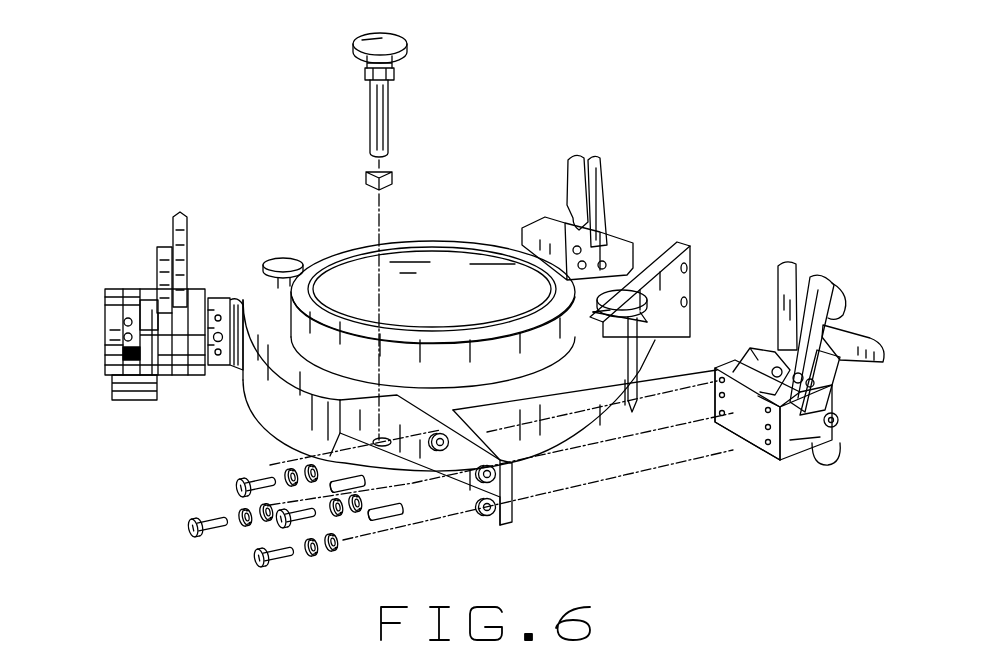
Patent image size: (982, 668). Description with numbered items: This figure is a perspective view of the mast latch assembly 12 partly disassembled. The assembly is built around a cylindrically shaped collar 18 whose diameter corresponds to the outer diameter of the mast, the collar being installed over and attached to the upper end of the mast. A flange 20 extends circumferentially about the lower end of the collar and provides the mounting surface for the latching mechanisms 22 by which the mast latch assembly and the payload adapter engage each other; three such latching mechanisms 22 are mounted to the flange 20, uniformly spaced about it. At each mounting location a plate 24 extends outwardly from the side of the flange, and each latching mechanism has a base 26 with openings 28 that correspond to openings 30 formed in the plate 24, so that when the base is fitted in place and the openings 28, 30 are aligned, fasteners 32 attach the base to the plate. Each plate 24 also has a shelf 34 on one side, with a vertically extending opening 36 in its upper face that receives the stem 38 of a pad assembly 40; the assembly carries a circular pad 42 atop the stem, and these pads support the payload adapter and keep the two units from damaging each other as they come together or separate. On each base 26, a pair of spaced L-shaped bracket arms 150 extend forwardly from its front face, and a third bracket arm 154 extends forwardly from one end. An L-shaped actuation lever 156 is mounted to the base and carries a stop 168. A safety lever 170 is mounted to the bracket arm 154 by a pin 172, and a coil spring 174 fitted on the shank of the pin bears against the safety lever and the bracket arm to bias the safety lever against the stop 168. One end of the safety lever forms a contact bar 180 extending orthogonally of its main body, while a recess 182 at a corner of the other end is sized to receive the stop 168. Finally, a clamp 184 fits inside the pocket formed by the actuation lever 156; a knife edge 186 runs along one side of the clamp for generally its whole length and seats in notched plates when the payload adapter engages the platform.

The mast latch assembly 12 is at (650, 493).
The collar 18 is at (405, 300).
The flange 20 is at (576, 402).
The latching mechanism 22 is at (78, 350).
The plate 24 is at (514, 510).
The base 26 is at (233, 300).
The openings 28 is at (219, 358).
The openings 30 is at (441, 452).
The fasteners 32 is at (162, 518).
The shelf 34 is at (330, 451).
The opening 36 is at (385, 435).
The stem 38 is at (370, 108).
The pad assembly 40 is at (440, 77).
The circular pad 42 is at (374, 30).
The L-shaped bracket arms 150 is at (748, 354).
The bracket arm 154 is at (105, 328).
The actuation lever 156 is at (163, 243).
The stop 168 is at (830, 307).
The safety lever 170 is at (142, 313).
The pin 172 is at (110, 352).
The coil spring 174 is at (130, 365).
The contact bar 180 is at (150, 400).
The recess 182 is at (833, 327).
The clamp 184 is at (190, 222).
The knife edge 186 is at (567, 188).